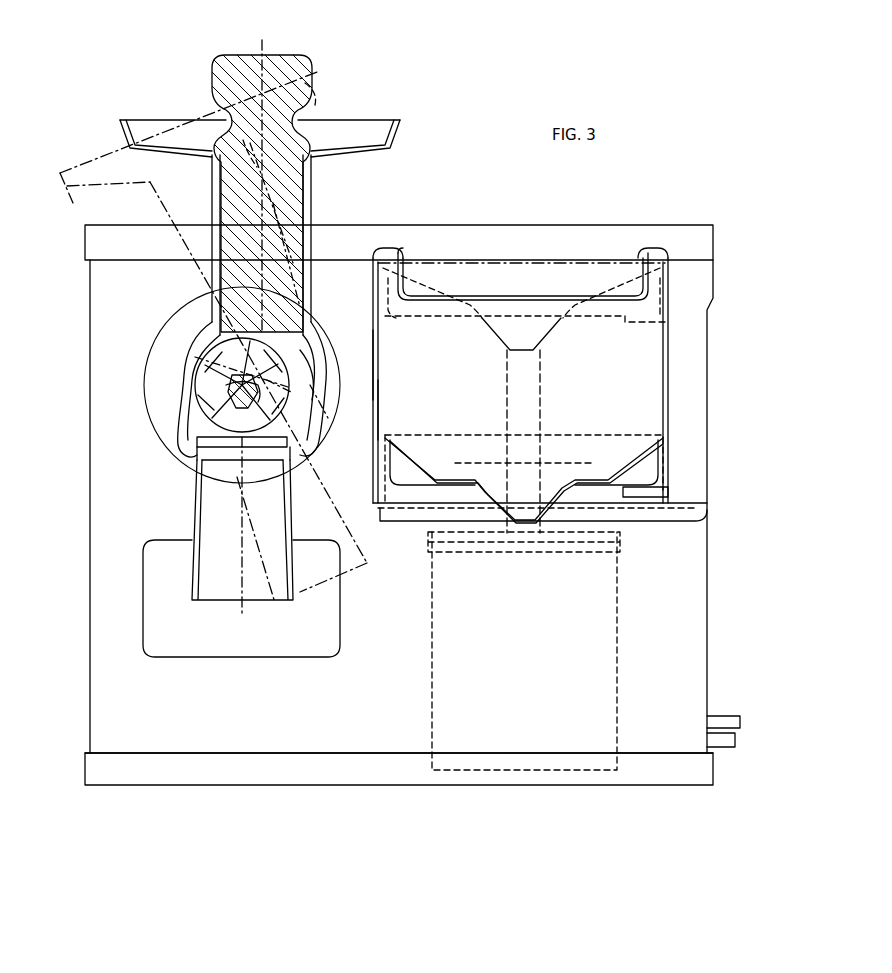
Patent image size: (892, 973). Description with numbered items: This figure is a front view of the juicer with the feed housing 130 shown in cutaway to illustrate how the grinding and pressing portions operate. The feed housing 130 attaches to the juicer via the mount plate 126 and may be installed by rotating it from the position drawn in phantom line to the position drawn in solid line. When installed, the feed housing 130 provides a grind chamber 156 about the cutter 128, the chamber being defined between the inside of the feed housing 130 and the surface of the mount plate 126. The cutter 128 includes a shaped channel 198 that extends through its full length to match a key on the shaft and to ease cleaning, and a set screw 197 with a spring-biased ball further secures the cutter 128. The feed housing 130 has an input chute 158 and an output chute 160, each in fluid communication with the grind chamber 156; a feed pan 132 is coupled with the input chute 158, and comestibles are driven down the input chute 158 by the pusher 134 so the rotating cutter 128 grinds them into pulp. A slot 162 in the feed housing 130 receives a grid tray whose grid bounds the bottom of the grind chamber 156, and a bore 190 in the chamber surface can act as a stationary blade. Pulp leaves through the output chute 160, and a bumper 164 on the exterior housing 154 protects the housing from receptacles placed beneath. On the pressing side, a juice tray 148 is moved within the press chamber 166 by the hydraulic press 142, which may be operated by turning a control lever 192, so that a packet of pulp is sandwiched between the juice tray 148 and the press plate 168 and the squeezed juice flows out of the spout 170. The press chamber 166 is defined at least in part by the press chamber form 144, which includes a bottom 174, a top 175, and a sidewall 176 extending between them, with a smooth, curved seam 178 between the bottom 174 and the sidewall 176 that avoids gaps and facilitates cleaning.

The mount plate 126 is at (152, 415).
The cutter 128 is at (212, 367).
The feed housing 130 is at (330, 365).
The feed pan 132 is at (400, 130).
The pusher 134 is at (300, 63).
The hydraulic press 142 is at (613, 652).
The press chamber form 144 is at (378, 358).
The juice tray 148 is at (600, 320).
The exterior housing 154 is at (120, 742).
The grind chamber 156 is at (187, 453).
The input chute 158 is at (212, 203).
The output chute 160 is at (192, 557).
The slot 162 is at (182, 467).
The bumper 164 is at (283, 657).
The press chamber 166 is at (660, 390).
The press plate 168 is at (518, 297).
The spout 170 is at (550, 337).
The bottom 174 is at (640, 500).
The top 175 is at (400, 250).
The sidewall 176 is at (378, 400).
The seam 178 is at (393, 503).
The bore 190 is at (187, 368).
The control lever 192 is at (725, 718).
The set screw 197 is at (307, 447).
The shaped channel 198 is at (310, 417).